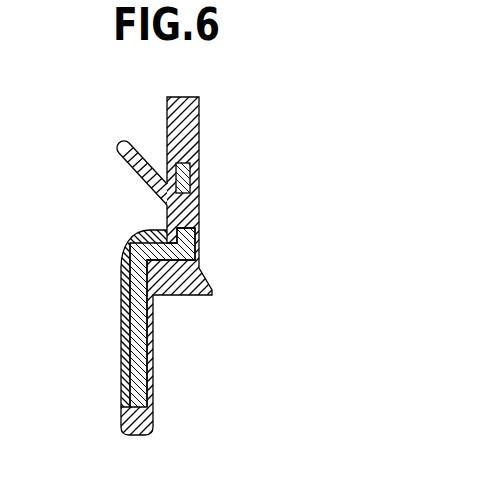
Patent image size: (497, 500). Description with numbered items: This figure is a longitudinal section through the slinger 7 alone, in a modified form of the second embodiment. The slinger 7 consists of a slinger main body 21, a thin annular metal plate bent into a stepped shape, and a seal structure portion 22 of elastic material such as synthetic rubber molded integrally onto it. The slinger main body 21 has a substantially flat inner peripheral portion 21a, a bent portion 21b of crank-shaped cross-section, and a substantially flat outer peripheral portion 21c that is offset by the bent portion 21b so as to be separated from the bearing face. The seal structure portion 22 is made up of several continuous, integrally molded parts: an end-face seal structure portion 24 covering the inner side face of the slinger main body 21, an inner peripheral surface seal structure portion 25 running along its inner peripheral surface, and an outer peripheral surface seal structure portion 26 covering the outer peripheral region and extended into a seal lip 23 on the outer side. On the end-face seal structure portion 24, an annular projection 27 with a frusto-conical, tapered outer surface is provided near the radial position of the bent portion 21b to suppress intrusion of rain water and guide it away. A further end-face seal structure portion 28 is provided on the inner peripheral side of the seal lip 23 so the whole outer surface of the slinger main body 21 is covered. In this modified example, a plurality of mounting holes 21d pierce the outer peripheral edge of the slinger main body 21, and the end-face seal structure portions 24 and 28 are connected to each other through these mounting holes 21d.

The slinger 7 is at (193, 84).
The slinger main body 21 is at (192, 177).
The inner peripheral portion 21a is at (130, 367).
The bent portion 21b is at (165, 236).
The outer peripheral portion 21c is at (200, 185).
The mounting holes 21d is at (195, 203).
The seal structure portion 22 is at (201, 125).
The seal lip 23 is at (122, 152).
The end-face seal structure portion 24 is at (150, 378).
The inner peripheral surface seal structure portion 25 is at (140, 425).
The outer peripheral surface seal structure portion 26 is at (172, 118).
The annular projection 27 is at (212, 291).
The end-face seal structure portion 28 is at (123, 306).